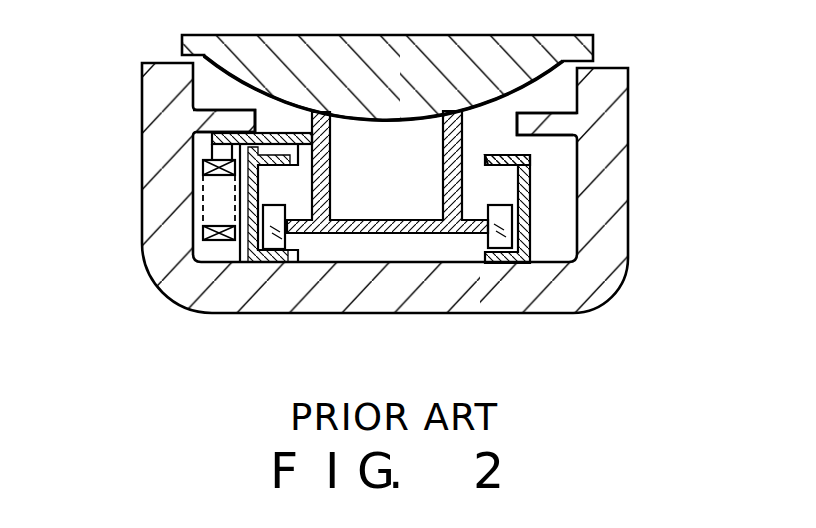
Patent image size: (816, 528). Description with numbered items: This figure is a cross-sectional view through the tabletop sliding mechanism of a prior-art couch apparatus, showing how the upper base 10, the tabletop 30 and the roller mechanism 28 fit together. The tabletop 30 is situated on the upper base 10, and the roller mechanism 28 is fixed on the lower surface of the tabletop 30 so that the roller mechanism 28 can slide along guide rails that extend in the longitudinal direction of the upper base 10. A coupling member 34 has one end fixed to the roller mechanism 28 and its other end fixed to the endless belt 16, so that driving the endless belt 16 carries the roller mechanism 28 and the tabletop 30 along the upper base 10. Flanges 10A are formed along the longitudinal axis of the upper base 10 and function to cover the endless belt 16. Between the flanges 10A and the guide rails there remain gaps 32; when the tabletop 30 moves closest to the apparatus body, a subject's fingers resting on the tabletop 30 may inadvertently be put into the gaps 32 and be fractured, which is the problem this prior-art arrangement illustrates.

The upper base 10 is at (612, 232).
The flanges 10A is at (227, 123).
The endless belt 16 is at (218, 243).
The roller mechanism 28 is at (321, 264).
The tabletop 30 is at (405, 55).
The gaps 32 is at (263, 131).
The coupling member 34 is at (291, 141).